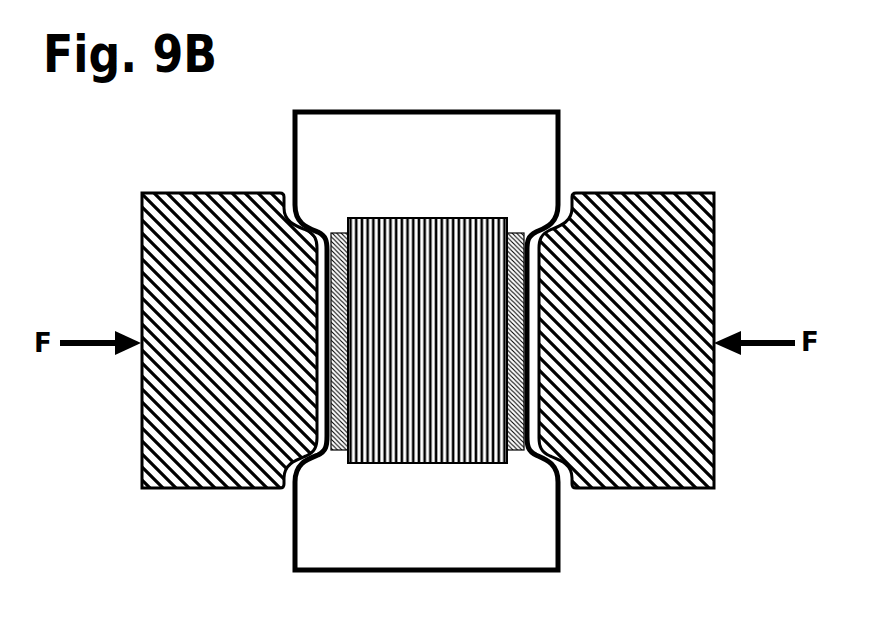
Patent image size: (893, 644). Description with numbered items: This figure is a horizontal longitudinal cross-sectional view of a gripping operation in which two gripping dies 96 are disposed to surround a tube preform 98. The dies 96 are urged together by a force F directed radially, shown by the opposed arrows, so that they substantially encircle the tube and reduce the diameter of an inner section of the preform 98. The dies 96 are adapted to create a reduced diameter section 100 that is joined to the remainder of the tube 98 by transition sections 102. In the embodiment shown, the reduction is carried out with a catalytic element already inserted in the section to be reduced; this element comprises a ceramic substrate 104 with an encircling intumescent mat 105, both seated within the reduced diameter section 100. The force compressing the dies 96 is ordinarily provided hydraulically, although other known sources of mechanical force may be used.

The gripping dies 96 is at (140, 283).
The preform 98 is at (562, 159).
The reduced diameter section 100 is at (313, 373).
The transition sections 102 is at (310, 466).
The ceramic substrate 104 is at (416, 218).
The intumescent mat 105 is at (518, 452).